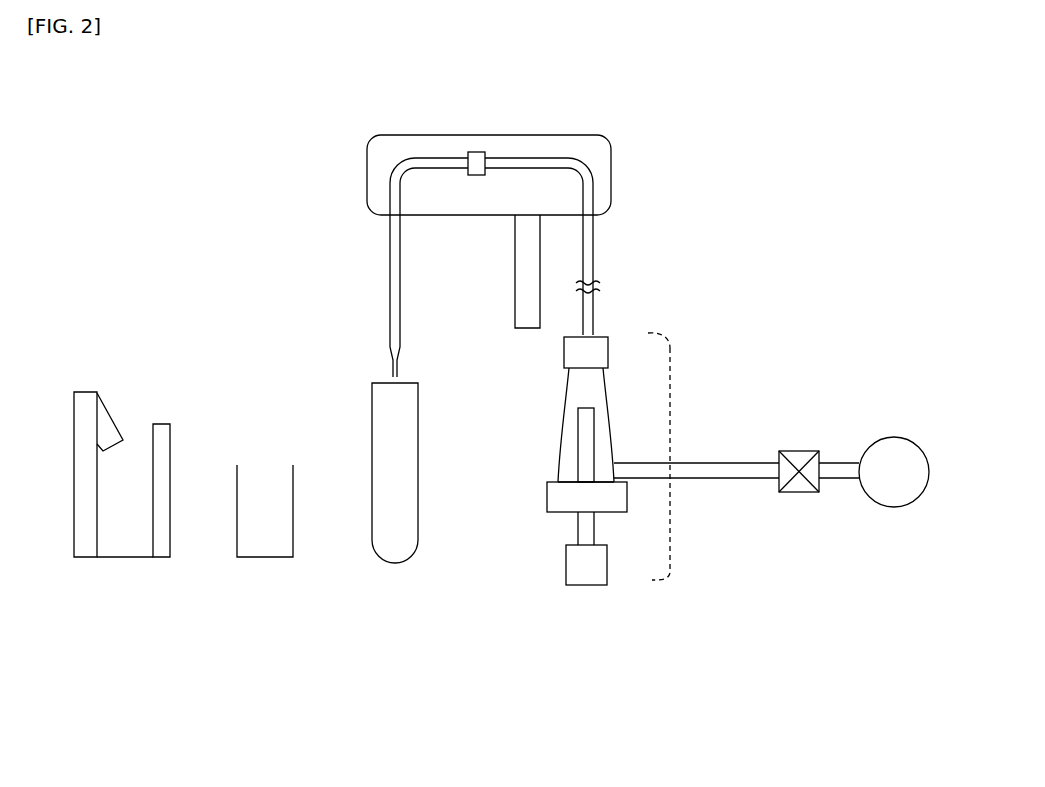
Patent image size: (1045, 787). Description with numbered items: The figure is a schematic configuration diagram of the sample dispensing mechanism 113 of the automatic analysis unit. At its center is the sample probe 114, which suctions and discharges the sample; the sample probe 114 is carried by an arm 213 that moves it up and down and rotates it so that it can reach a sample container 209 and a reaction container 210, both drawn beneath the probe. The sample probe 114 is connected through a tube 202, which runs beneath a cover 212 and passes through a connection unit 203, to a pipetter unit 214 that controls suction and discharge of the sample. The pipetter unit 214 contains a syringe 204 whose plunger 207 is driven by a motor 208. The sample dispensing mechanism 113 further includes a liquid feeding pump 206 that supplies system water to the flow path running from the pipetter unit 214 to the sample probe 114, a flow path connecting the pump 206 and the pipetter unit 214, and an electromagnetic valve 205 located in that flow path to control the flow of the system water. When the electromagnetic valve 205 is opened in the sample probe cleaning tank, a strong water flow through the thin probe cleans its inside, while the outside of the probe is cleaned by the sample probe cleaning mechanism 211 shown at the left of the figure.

The sample dispensing mechanism 113 is at (273, 104).
The sample dispensing probe (sample probe) 114 is at (390, 290).
The tube 202 is at (522, 155).
The connection unit 203 is at (476, 152).
The syringe 204 is at (603, 393).
The electromagnetic valve 205 is at (803, 492).
The liquid feeding pump 206 is at (893, 507).
The plunger 207 is at (578, 446).
The motor 208 is at (565, 567).
The sample container 209 is at (418, 463).
The reaction container 210 is at (240, 478).
The sample probe cleaning mechanism 211 is at (117, 420).
The cover 212 is at (611, 158).
The arm 213 is at (517, 318).
The pipetter unit 214 is at (670, 367).